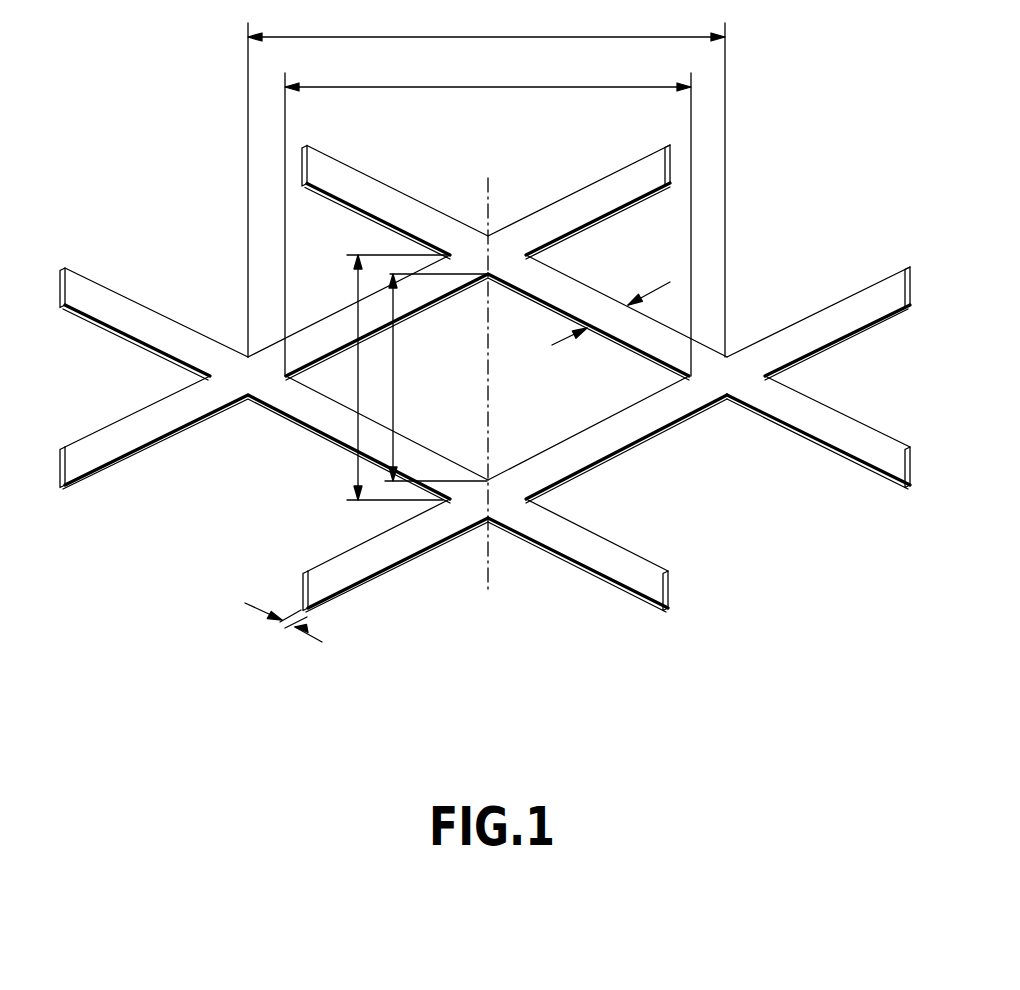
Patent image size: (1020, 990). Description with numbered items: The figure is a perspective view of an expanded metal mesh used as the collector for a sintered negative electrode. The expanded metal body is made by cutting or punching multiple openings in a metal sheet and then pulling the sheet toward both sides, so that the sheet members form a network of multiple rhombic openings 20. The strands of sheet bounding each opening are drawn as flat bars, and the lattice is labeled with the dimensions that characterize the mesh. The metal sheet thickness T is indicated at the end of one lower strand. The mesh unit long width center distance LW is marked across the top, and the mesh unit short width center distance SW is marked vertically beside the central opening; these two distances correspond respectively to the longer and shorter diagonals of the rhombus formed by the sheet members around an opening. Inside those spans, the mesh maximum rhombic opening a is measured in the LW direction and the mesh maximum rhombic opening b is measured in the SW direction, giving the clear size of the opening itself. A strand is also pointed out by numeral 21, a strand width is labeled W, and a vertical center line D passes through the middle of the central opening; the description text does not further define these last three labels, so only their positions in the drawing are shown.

The rhombic opening 20 is at (485, 378).
The strand 21 is at (658, 411).
The mesh long width center distance LW is at (486, 181).
The mesh short width center distance SW is at (391, 377).
The mesh maximum rhombic opening in LW direction a is at (488, 219).
The mesh maximum rhombic opening in SW direction b is at (435, 377).
The strand width W is at (611, 307).
The metal sheet thickness T is at (283, 626).
The centre line D-D' D is at (492, 384).